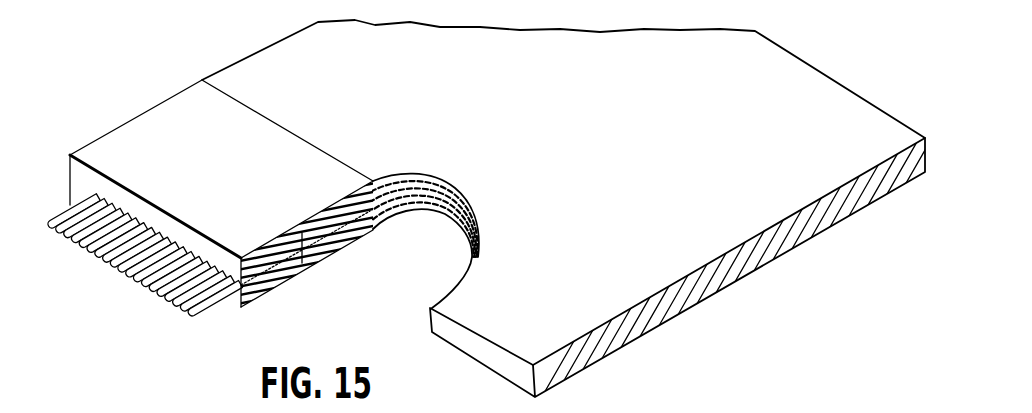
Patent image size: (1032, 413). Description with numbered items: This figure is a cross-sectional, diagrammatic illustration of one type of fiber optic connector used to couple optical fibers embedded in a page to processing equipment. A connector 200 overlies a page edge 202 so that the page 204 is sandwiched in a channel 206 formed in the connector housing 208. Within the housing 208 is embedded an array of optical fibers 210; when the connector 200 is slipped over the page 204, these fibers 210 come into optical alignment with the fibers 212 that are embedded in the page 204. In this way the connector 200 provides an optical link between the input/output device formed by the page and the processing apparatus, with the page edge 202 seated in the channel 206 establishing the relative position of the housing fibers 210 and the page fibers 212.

The connector 200 is at (227, 180).
The page edge 202 is at (481, 347).
The page 204 is at (419, 212).
The channel 206 is at (373, 223).
The connector housing 208 is at (275, 135).
The optical fibers 210 is at (292, 310).
The fibers embedded in the page 212 is at (393, 178).